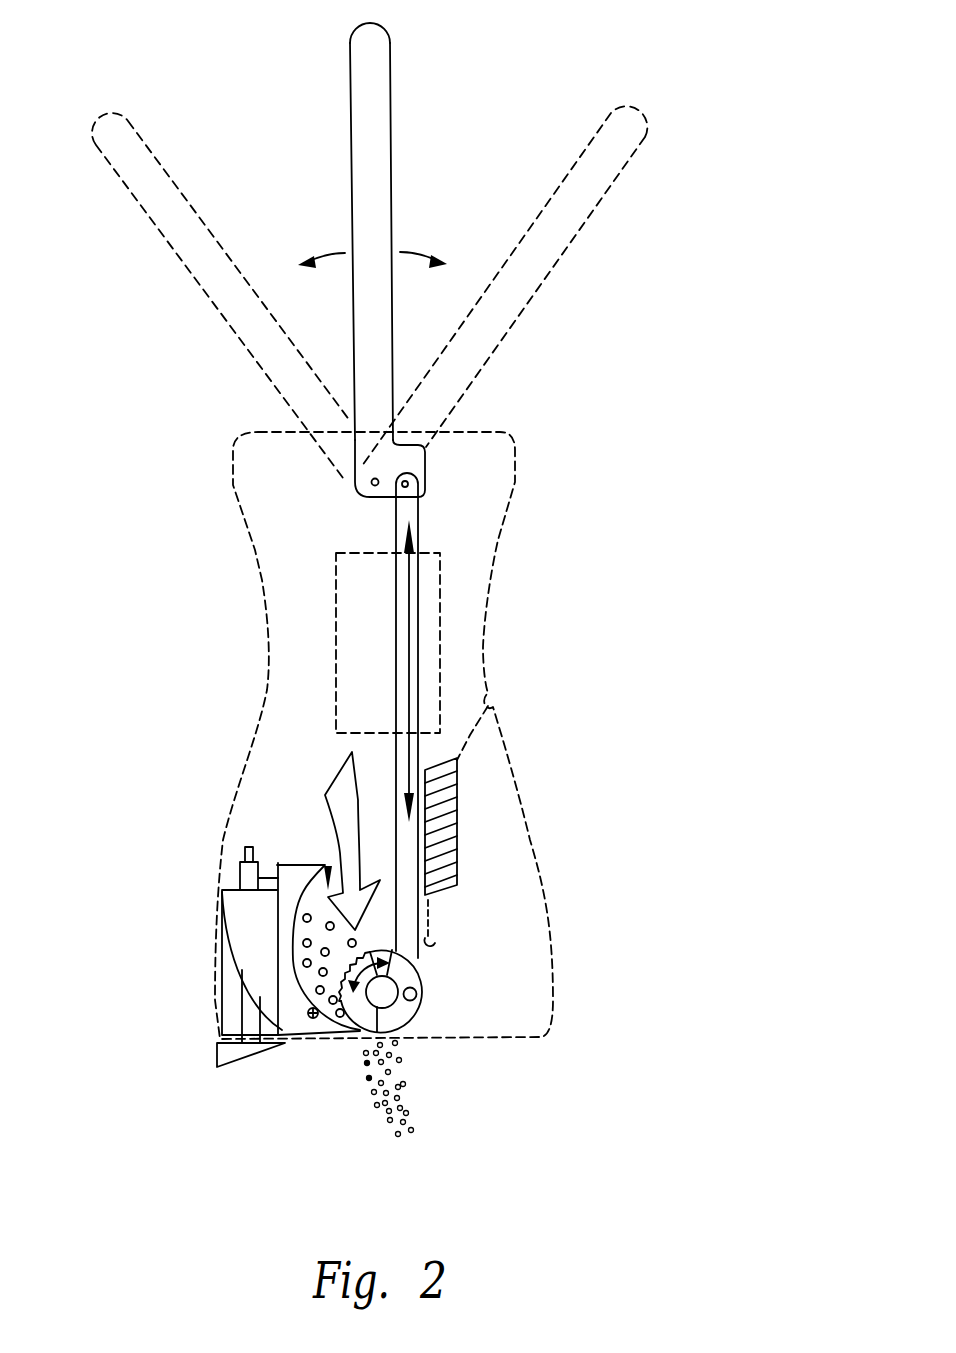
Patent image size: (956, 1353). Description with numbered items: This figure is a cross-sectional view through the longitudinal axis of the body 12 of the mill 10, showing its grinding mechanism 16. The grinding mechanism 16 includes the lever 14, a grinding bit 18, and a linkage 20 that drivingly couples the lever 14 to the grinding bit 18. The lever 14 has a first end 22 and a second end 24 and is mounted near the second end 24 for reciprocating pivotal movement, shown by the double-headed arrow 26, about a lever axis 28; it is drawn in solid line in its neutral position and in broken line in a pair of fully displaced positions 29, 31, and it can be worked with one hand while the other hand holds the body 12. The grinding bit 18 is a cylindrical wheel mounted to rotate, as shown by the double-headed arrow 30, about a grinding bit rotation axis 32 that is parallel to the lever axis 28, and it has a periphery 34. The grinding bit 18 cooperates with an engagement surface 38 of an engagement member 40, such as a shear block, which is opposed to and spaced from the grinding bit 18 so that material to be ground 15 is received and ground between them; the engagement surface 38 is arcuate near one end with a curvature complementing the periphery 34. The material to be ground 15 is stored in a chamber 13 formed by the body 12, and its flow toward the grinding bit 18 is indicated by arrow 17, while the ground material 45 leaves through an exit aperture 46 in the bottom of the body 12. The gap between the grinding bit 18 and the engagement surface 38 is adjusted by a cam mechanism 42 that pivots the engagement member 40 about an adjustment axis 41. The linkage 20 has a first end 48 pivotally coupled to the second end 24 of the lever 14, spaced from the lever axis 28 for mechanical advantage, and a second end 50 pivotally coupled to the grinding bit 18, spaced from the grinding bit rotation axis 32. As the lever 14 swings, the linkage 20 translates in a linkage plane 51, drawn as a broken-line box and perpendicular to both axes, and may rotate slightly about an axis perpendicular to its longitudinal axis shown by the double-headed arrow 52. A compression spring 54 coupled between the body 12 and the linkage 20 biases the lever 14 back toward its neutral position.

The mill 10 is at (170, 652).
The body 12 is at (268, 632).
The chamber 13 is at (292, 674).
The lever 14 is at (393, 150).
The material to be ground 15 is at (327, 868).
The grinding mechanism 16 is at (466, 540).
The arrow 17 is at (338, 773).
The grinding bit 18 is at (405, 973).
The linkage 20 is at (420, 632).
The first end 22 is at (360, 48).
The second end 24 is at (355, 475).
The double-headed arrow 26 is at (410, 255).
The lever axis 28 is at (373, 486).
The fully displaced position 29 is at (548, 268).
The double-headed arrow 30 is at (362, 962).
The fully displaced position 31 is at (195, 272).
The grinding bit rotation axis 32 is at (382, 992).
The periphery 34 is at (420, 1013).
The engagement surface 38 is at (300, 886).
The engagement member 40 is at (243, 875).
The adjustment axis 41 is at (310, 1018).
The cam mechanism 42 is at (253, 1020).
The ground material 45 is at (370, 1125).
The exit aperture 46 is at (360, 1043).
The first end 48 is at (410, 522).
The second end 50 is at (427, 962).
The linkage plane 51 is at (438, 582).
The double-headed arrow 52 is at (410, 678).
The compression spring 54 is at (448, 820).